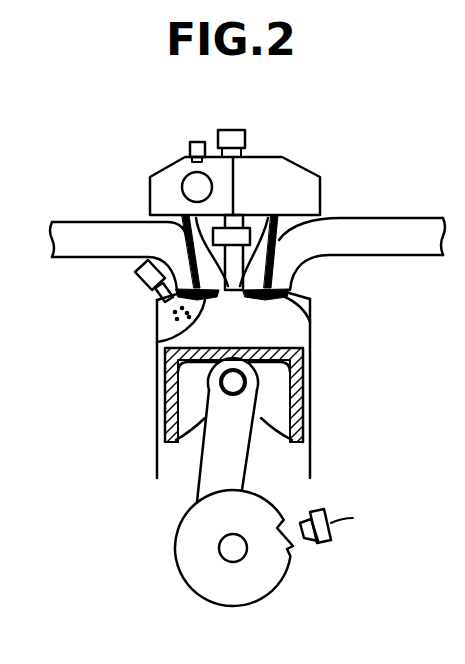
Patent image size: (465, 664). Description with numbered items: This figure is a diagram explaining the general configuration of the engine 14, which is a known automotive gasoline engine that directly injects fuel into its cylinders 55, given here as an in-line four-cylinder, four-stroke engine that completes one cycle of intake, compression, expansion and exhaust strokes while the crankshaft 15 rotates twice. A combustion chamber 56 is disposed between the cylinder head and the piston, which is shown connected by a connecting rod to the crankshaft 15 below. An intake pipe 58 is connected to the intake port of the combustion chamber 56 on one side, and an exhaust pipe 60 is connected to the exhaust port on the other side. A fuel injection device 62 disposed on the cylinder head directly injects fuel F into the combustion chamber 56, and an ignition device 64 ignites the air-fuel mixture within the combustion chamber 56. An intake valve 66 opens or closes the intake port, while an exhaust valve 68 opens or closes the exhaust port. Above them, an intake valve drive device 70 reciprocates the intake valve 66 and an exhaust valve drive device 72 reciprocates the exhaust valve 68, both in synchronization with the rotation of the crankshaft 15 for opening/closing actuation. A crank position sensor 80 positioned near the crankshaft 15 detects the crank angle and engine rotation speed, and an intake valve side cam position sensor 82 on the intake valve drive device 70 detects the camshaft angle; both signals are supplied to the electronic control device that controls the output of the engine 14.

The engine 14 is at (95, 137).
The crankshaft 15 is at (233, 553).
The cylinder 55 is at (313, 375).
The combustion chamber 56 is at (292, 332).
The intake pipe 58 is at (80, 221).
The exhaust pipe 60 is at (410, 217).
The fuel injection device 62 is at (140, 282).
The ignition device 64 is at (236, 130).
The intake valve 66 is at (160, 341).
The exhaust valve 68 is at (310, 322).
The intake valve drive device 70 is at (156, 190).
The exhaust valve drive device 72 is at (320, 192).
The crank position sensor 80 is at (321, 543).
The intake valve side cam position sensor 82 is at (197, 142).
The fuel F is at (172, 312).